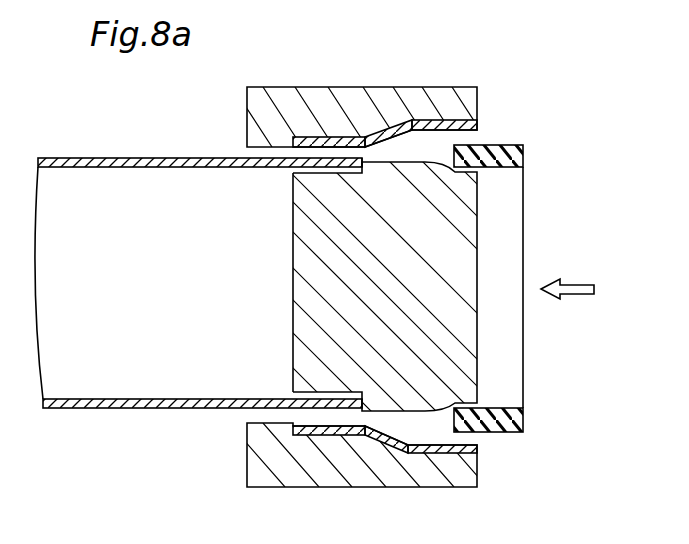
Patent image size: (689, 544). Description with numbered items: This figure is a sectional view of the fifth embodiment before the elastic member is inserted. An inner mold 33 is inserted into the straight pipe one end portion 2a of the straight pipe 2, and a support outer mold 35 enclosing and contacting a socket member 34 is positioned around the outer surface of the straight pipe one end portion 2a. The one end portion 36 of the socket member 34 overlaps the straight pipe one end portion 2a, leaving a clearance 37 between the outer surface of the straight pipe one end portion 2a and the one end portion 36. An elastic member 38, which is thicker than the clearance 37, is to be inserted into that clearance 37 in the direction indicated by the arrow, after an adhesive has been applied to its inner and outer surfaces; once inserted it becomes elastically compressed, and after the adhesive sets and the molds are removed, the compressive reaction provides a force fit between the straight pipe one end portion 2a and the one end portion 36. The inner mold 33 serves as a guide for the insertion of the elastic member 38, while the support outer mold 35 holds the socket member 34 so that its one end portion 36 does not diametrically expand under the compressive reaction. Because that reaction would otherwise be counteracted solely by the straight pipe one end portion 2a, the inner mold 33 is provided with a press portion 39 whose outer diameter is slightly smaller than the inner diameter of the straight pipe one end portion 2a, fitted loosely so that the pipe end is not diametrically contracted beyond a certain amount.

The straight pipe 2 is at (85, 158).
The straight pipe one end portion 2a is at (290, 177).
The inner mold 33 is at (455, 245).
The socket member 34 is at (432, 120).
The support outer mold 35 is at (358, 113).
The one end portion of the socket member 36 is at (318, 135).
The clearance 37 is at (293, 152).
The elastic member 38 is at (508, 150).
The press portion 39 is at (320, 267).